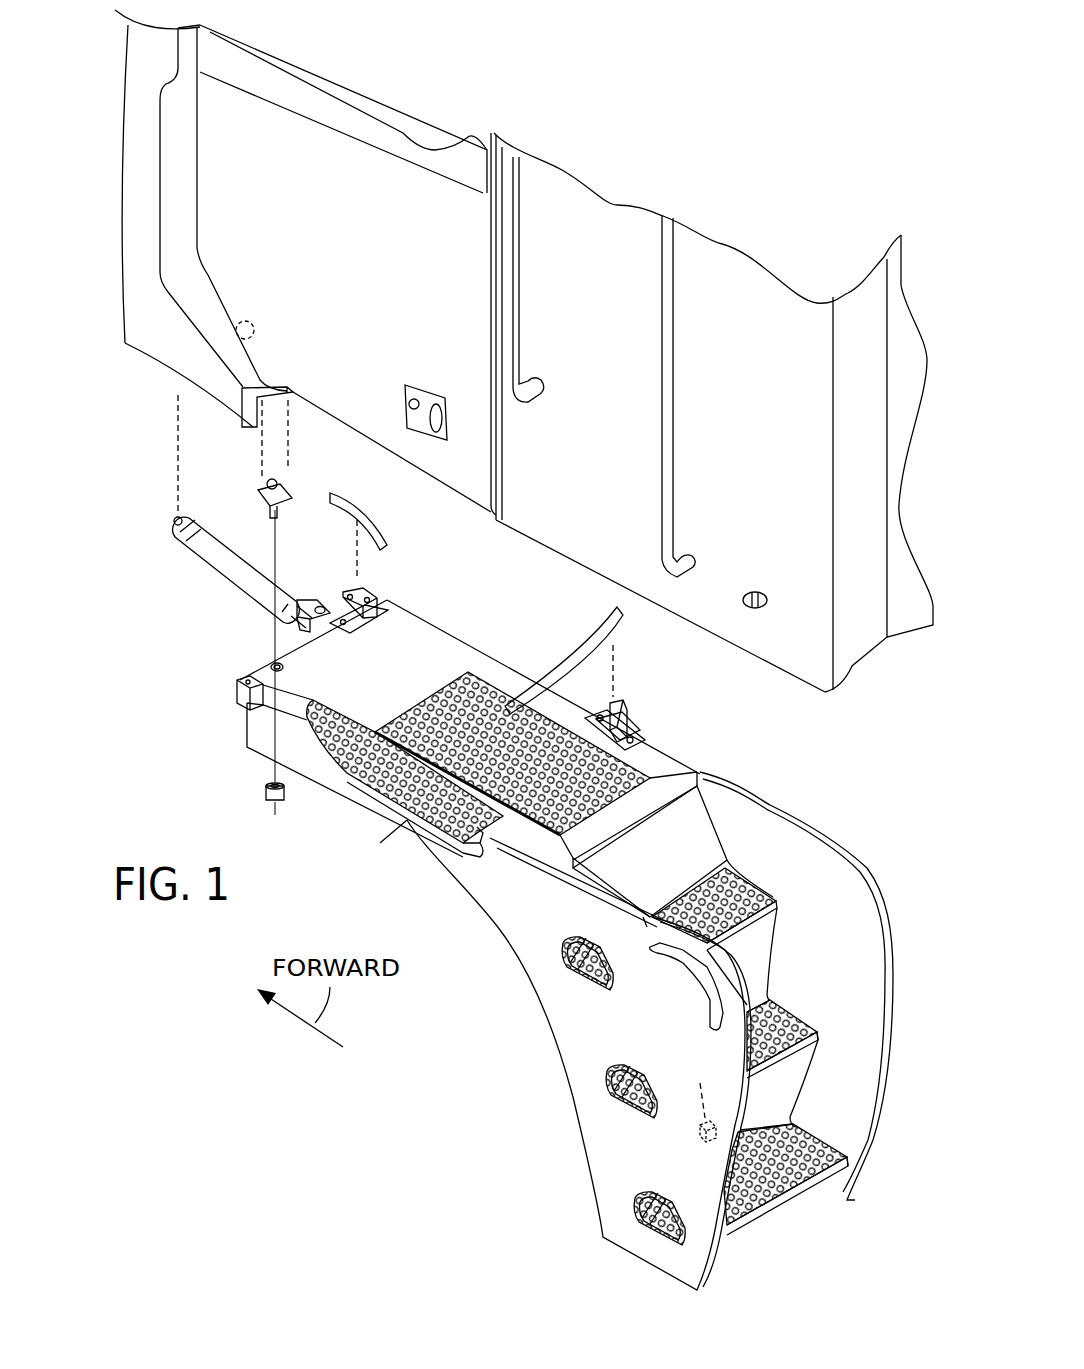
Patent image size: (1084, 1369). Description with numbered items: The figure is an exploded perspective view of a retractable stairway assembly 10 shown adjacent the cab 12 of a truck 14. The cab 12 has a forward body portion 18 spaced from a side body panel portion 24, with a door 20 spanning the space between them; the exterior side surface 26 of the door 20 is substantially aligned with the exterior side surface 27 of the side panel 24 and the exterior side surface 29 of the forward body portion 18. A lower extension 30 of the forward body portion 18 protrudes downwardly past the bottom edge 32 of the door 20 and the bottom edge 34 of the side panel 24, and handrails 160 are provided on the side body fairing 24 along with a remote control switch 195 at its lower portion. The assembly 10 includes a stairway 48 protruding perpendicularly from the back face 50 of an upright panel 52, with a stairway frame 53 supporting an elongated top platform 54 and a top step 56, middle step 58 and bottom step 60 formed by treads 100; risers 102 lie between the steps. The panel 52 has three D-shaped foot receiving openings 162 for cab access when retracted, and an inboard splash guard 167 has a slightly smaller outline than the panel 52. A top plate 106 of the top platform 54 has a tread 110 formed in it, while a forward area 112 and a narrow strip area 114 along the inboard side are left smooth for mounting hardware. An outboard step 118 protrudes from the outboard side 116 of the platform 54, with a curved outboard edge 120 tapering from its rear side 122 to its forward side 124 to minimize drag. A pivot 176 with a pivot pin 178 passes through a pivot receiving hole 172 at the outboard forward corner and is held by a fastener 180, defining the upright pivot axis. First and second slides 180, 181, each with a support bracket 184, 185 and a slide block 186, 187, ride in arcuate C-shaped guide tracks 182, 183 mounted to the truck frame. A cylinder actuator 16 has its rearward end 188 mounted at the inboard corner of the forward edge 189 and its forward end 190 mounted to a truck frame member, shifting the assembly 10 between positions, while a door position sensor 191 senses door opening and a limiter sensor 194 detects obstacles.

The stairway assembly 10 is at (491, 982).
The cab 12 is at (618, 201).
The truck 14 is at (910, 515).
The actuator 16 is at (228, 572).
The forward body portion 18 is at (125, 320).
The door 20 is at (452, 500).
The side body panel portion 24 is at (762, 280).
The exterior side surface 26 is at (378, 190).
The exterior side surface 27 is at (557, 235).
The exterior side surface 29 is at (118, 188).
The lower extension 30 is at (157, 373).
The bottom edge 32 is at (322, 410).
The bottom edge 34 is at (680, 620).
The stairway 48 is at (803, 1212).
The back face 50 is at (740, 1117).
The upright panel 52 is at (573, 1093).
The stairway frame 53 is at (787, 1013).
The top platform 54 is at (678, 752).
The top step 56 is at (740, 877).
The middle step 58 is at (768, 1000).
The bottom step 60 is at (813, 1150).
The treads 100 is at (753, 892).
The riser 102 is at (692, 813).
The top plate 106 is at (437, 670).
The tread 110 is at (680, 758).
The forward area 112 is at (236, 679).
The narrow strip area 114 is at (652, 748).
The outboard side 116 is at (503, 880).
The outboard step 118 is at (393, 787).
The curved outboard edge 120 is at (407, 820).
The rear side 122 is at (477, 858).
The forward side 124 is at (307, 737).
The handrails 160 is at (514, 314).
The foot receiving openings 162 is at (613, 972).
The inboard splash guard 167 is at (853, 853).
The pivot receiving hole 172 is at (285, 664).
The pivot 176 is at (250, 485).
The pivot pin 178 is at (268, 509).
The first slide 180 is at (394, 607).
The second slide 181 is at (642, 708).
The first guide track 182 is at (362, 500).
The second guide track 183 is at (587, 648).
The support bracket 184 is at (365, 636).
The support bracket 185 is at (647, 727).
The slide block 186 is at (372, 590).
The slide block 187 is at (615, 708).
The rearward end 188 is at (310, 598).
The forward edge 189 is at (257, 641).
The forward end 190 is at (153, 512).
The door position sensor 191 is at (254, 330).
The extension and retraction limiter sensor 194 is at (697, 1097).
The remote control switch 195 is at (750, 590).